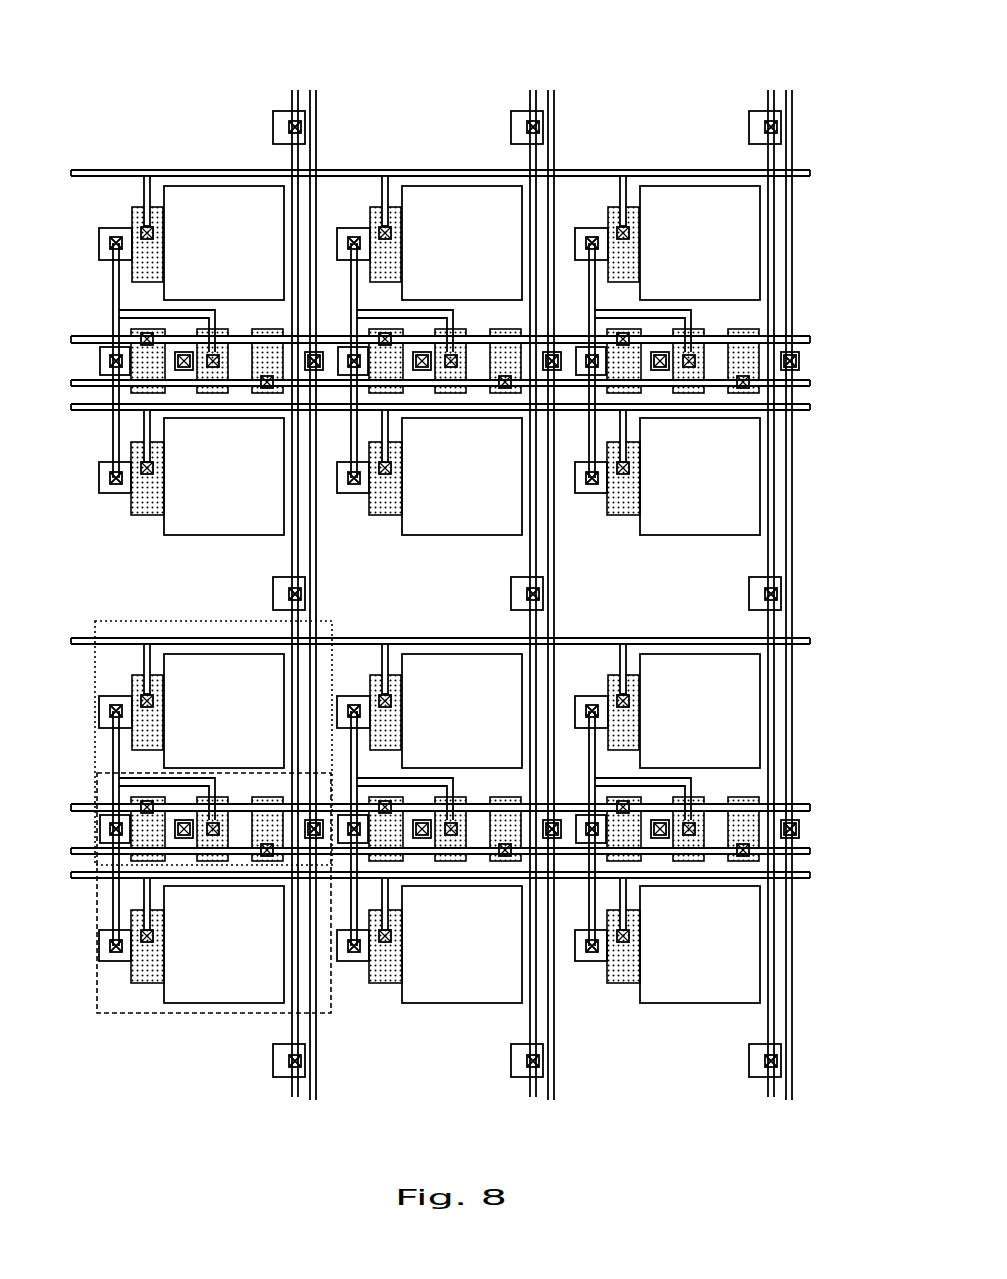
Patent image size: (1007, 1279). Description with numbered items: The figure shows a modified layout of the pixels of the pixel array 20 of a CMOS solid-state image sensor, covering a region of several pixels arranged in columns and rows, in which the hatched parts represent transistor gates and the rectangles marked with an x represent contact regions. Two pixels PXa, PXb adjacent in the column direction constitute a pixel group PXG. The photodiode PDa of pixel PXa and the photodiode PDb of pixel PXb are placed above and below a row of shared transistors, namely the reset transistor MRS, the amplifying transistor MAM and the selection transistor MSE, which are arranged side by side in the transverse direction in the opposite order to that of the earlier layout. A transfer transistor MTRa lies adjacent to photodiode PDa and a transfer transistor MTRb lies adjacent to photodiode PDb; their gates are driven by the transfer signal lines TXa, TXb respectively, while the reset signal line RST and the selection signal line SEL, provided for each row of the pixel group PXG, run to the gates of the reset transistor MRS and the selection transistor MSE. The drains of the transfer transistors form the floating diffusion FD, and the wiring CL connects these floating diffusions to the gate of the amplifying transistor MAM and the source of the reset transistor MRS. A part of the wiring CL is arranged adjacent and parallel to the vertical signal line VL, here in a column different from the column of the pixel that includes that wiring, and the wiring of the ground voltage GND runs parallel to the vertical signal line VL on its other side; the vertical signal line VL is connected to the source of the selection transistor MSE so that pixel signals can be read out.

The pixel array 20 is at (78, 55).
The transfer signal line TXa is at (423, 407).
The transfer signal line TXb is at (423, 639).
The reset signal line RST is at (423, 573).
The selection signal line SEL is at (423, 614).
The floating diffusion FD is at (120, 222).
The wiring CL is at (112, 283).
The transfer transistor MTRa is at (137, 200).
The transfer transistor MTRb is at (142, 522).
The reset transistor MRS is at (170, 327).
The amplifying transistor MAM is at (223, 325).
The selection transistor MSE is at (258, 325).
The photodiode PDa is at (278, 242).
The photodiode PDb is at (253, 516).
The ground voltage wiring GND is at (527, 581).
The vertical signal line VL is at (318, 98).
The pixel PXa is at (95, 735).
The pixel PXb is at (138, 1013).
The pixel group PXG is at (156, 1075).